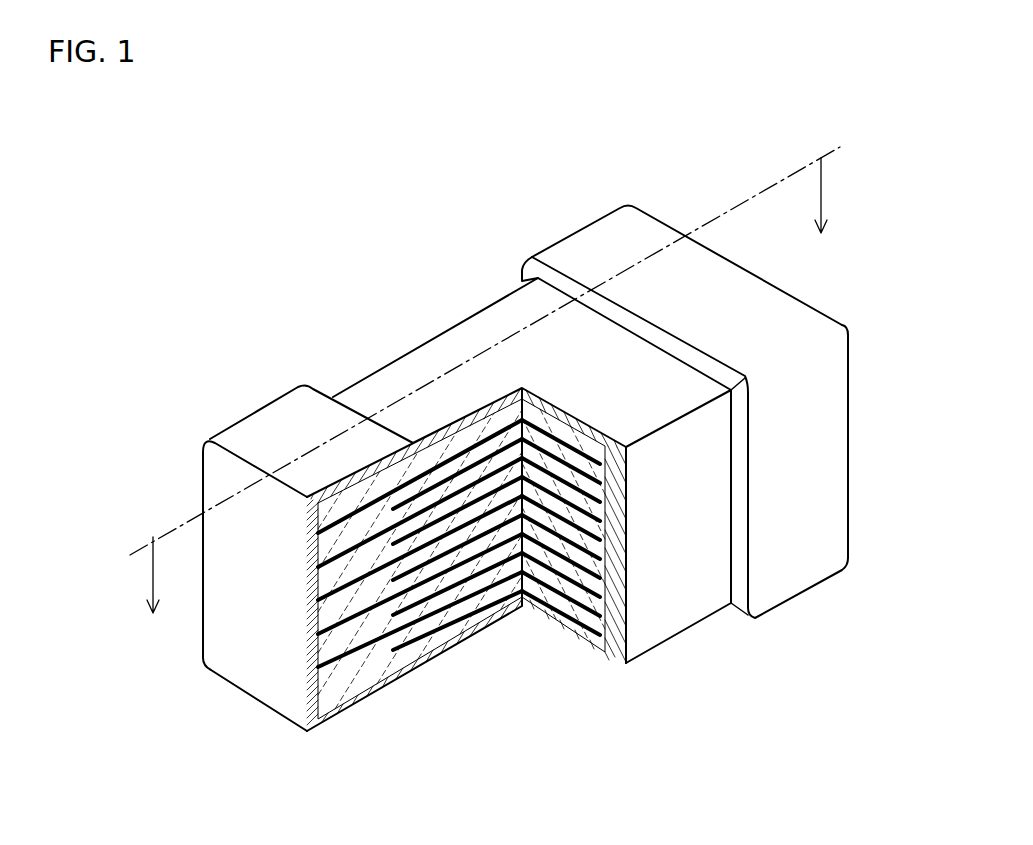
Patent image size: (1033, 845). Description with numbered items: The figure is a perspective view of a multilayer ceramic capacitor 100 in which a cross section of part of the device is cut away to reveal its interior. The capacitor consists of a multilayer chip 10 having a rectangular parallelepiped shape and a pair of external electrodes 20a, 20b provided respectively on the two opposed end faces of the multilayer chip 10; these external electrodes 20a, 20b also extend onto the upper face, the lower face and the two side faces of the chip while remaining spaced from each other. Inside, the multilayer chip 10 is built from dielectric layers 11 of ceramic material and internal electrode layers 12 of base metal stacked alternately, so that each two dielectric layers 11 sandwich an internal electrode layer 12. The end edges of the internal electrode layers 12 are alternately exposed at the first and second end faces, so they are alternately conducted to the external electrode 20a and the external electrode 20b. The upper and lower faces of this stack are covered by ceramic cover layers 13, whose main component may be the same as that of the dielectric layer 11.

The multilayer ceramic capacitor 100 is at (955, 132).
The multilayer chip 10 is at (349, 374).
The dielectric layer 11 is at (483, 604).
The internal electrode layer 12 is at (484, 564).
The cover layer 13 is at (488, 323).
The external electrode 20a is at (233, 427).
The external electrode 20b is at (582, 248).